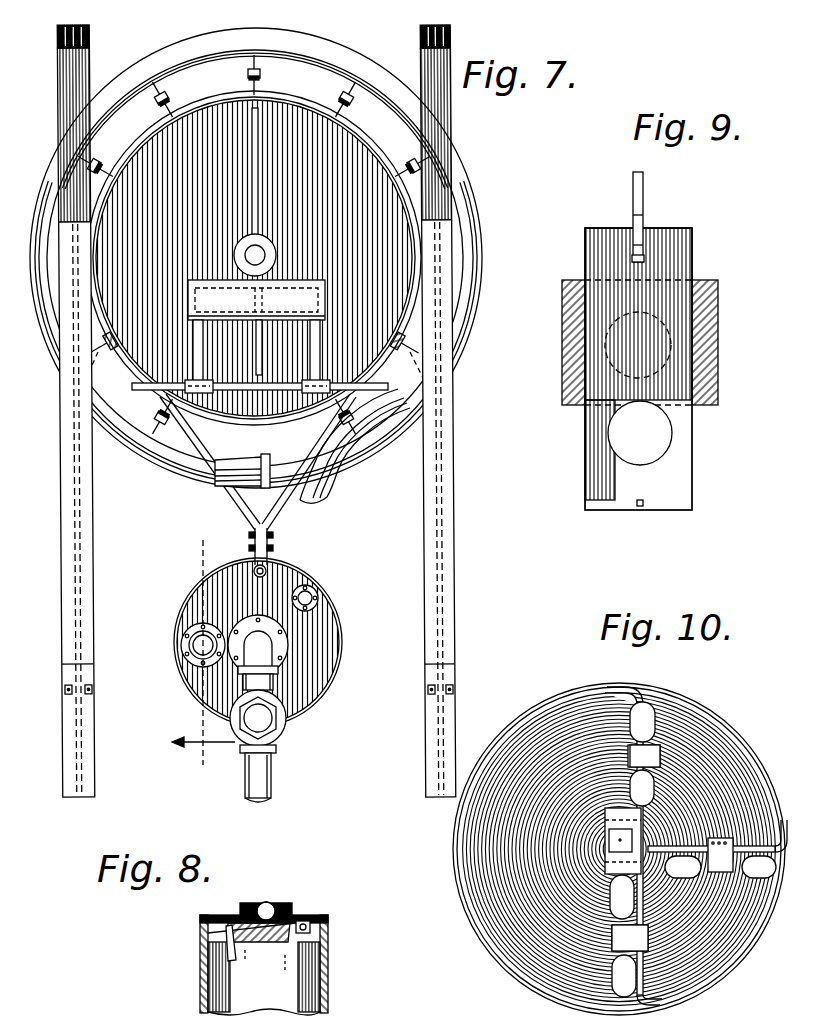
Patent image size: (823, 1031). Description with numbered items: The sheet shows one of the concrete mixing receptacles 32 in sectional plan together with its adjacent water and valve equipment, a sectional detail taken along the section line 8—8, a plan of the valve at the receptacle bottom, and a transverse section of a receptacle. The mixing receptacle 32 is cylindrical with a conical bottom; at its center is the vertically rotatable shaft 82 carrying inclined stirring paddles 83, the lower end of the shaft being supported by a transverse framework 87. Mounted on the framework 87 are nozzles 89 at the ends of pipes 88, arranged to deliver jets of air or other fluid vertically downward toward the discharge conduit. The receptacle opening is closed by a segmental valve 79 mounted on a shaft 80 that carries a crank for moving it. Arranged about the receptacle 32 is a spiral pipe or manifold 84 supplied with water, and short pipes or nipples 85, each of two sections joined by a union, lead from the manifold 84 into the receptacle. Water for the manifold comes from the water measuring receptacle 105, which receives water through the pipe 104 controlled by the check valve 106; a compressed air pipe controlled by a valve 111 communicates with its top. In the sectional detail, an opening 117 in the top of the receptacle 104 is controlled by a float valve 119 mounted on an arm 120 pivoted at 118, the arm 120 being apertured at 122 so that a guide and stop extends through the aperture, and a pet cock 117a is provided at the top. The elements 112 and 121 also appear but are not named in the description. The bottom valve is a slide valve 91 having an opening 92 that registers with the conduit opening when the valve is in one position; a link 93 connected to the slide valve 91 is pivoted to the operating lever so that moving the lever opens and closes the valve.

In FIG. 7, the section line 8— 8 is at (203, 661).
In FIG. 7, the mixing receptacle 32 is at (415, 178).
In FIG. 10, the mixing receptacle 32 is at (522, 724).
In FIG. 7, the segmental valve 79 is at (305, 280).
In FIG. 7, the shaft 80 is at (268, 386).
In FIG. 7, the vertically rotatable shaft 82 is at (259, 252).
In FIG. 10, the vertically rotatable shaft 82 is at (618, 850).
In FIG. 7, the inclined stirring paddles 83 is at (259, 150).
In FIG. 7, the spiral pipe or manifold 84 is at (340, 94).
In FIG. 7, the short pipes or nipples 85 is at (348, 100).
In FIG. 10, the transverse framework 87 is at (640, 798).
In FIG. 10, the pipes 88 is at (690, 724).
In FIG. 10, the nozzles 89 is at (680, 854).
In FIG. 9, the slide valve 91 is at (596, 466).
In FIG. 9, the opening 92 is at (640, 433).
In FIG. 9, the link 93 is at (633, 206).
In FIG. 7, the water measuring receptacle 104 is at (325, 632).
In FIG. 8, the water measuring receptacle 104 is at (322, 994).
In FIG. 7, the water measuring receptacle 105 is at (272, 657).
In FIG. 7, the check valve 106 is at (278, 728).
In FIG. 7, the valve 111 is at (317, 605).
In FIG. 7, the curved pipe 112 is at (276, 506).
In FIG. 7, the opening 117 is at (182, 648).
In FIG. 8, the opening 117 is at (270, 903).
In FIG. 7, the pet cock 117a is at (256, 568).
In FIG. 8, the pivot 118 is at (312, 917).
In FIG. 8, the float valve 119 is at (246, 910).
In FIG. 8, the arm 120 is at (292, 935).
In FIG. 8, the lever 121 is at (228, 956).
In FIG. 8, the aperture 122 is at (206, 940).